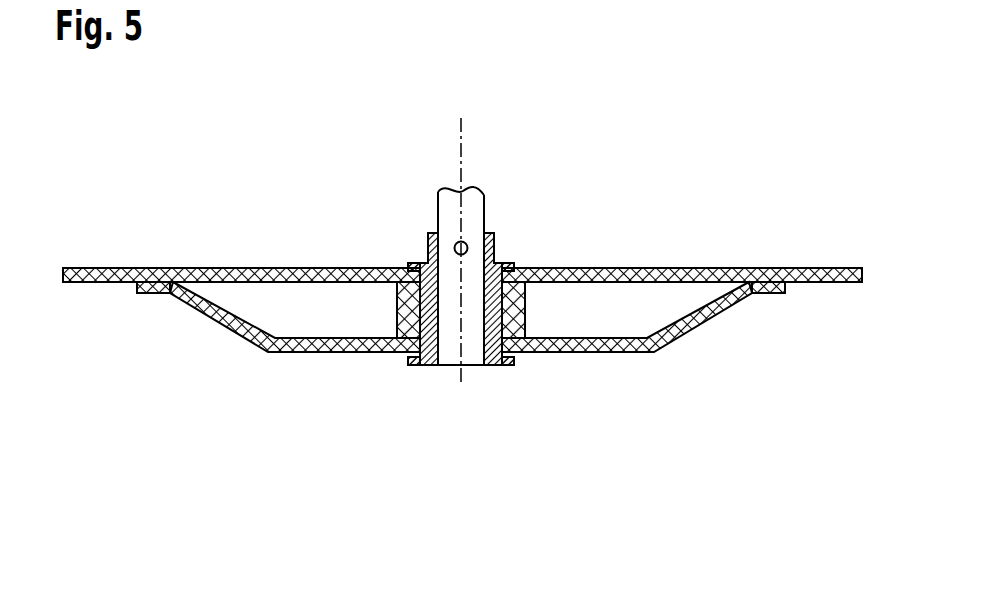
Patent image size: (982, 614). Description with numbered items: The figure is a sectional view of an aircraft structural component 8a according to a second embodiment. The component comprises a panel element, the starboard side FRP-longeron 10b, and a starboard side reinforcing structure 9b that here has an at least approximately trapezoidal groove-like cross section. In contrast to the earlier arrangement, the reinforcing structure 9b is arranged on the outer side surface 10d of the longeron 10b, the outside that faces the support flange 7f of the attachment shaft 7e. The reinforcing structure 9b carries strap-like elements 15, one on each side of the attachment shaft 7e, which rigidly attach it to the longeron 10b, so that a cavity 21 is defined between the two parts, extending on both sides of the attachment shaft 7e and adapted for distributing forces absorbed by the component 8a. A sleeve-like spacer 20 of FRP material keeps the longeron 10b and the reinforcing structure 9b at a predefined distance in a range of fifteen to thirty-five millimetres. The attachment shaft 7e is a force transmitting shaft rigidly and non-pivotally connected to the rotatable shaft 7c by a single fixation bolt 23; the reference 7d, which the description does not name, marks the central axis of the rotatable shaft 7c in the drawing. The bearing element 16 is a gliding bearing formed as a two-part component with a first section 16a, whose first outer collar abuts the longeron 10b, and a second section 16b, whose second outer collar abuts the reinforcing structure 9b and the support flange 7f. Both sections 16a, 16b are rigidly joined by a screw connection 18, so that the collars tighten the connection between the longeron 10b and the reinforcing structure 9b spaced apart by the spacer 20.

The rotatable shaft 7c is at (478, 200).
The shaft axis 7d is at (461, 142).
The attachment shaft 7e is at (487, 256).
The support flange 7f is at (492, 366).
The aircraft structural component 8a is at (250, 367).
The starboard side reinforcing structure 9b is at (690, 323).
The starboard side FRP-longeron 10b is at (690, 268).
The outer side surface 10d is at (831, 292).
The strap-like element 15 is at (155, 294).
The bearing element 16 is at (438, 318).
The first section 16a is at (421, 262).
The second section 16b is at (420, 366).
The screw connection 18 is at (516, 297).
The sleeve-like spacer 20 is at (523, 323).
The cavity 21 is at (316, 301).
The fixation bolt 23 is at (455, 244).